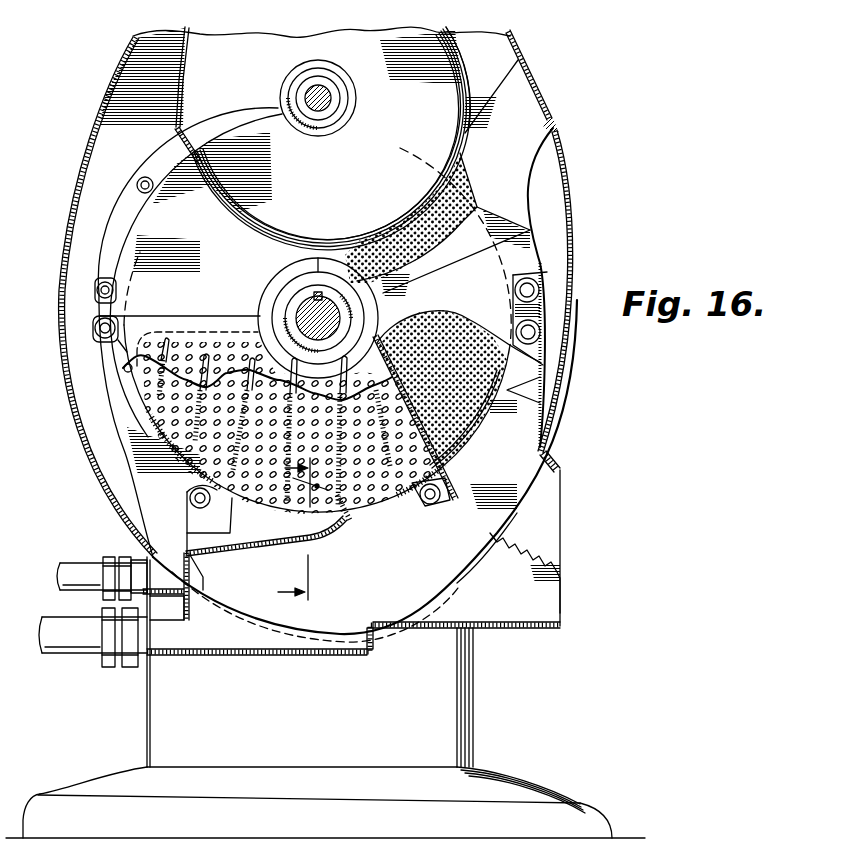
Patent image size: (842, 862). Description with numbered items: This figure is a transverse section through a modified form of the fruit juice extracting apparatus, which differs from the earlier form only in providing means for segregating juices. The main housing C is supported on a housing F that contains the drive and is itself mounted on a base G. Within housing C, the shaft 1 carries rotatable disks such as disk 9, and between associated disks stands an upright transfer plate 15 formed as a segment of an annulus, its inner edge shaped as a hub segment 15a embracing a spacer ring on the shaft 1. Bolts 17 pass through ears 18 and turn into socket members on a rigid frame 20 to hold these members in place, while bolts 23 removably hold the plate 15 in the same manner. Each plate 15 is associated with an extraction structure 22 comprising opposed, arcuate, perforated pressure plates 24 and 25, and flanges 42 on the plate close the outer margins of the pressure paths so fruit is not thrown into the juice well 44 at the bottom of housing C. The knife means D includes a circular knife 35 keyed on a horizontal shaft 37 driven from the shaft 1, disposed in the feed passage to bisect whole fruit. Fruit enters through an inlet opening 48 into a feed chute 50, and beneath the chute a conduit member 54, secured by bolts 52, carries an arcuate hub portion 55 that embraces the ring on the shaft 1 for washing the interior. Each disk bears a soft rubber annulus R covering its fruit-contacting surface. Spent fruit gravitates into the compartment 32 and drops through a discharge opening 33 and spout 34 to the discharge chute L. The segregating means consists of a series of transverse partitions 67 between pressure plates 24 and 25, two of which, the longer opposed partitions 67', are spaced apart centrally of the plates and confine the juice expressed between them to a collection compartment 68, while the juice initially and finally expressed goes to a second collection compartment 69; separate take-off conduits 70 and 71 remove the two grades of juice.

The shaft 1 is at (303, 311).
The disk 9 is at (465, 374).
The transfer plate 15 is at (317, 330).
The hub segment 15a is at (292, 270).
The bolts 17 is at (95, 328).
The ears 18 is at (100, 346).
The rigid frame 20 is at (125, 447).
The extraction structure 22 is at (154, 383).
The bolts 23 is at (143, 179).
The pressure plate 24 is at (207, 343).
The pressure plate 25 is at (157, 407).
The compartment 32 is at (490, 452).
The discharge opening 33 is at (550, 480).
The spout 34 is at (553, 550).
The circular knife 35 is at (468, 62).
The horizontal shaft 37 is at (298, 94).
The flanges 42 is at (143, 219).
The juice well 44 is at (226, 133).
The inlet opening 48 is at (538, 78).
The feed chute 50 is at (493, 109).
The bolts 52 is at (540, 288).
The conduit member 54 is at (443, 229).
The arcuate hub portion 55 is at (352, 268).
The transverse partitions 67 is at (274, 445).
The partitions 67' is at (358, 518).
The collection compartment 68 is at (272, 545).
The collection compartment 69 is at (226, 653).
The take-off conduit 70 is at (83, 567).
The take-off conduit 71 is at (60, 618).
The housing C is at (575, 178).
The knife means D is at (170, 73).
The means R is at (472, 400).
The discharge chute L is at (546, 517).
The housing F is at (312, 685).
The base G is at (513, 793).